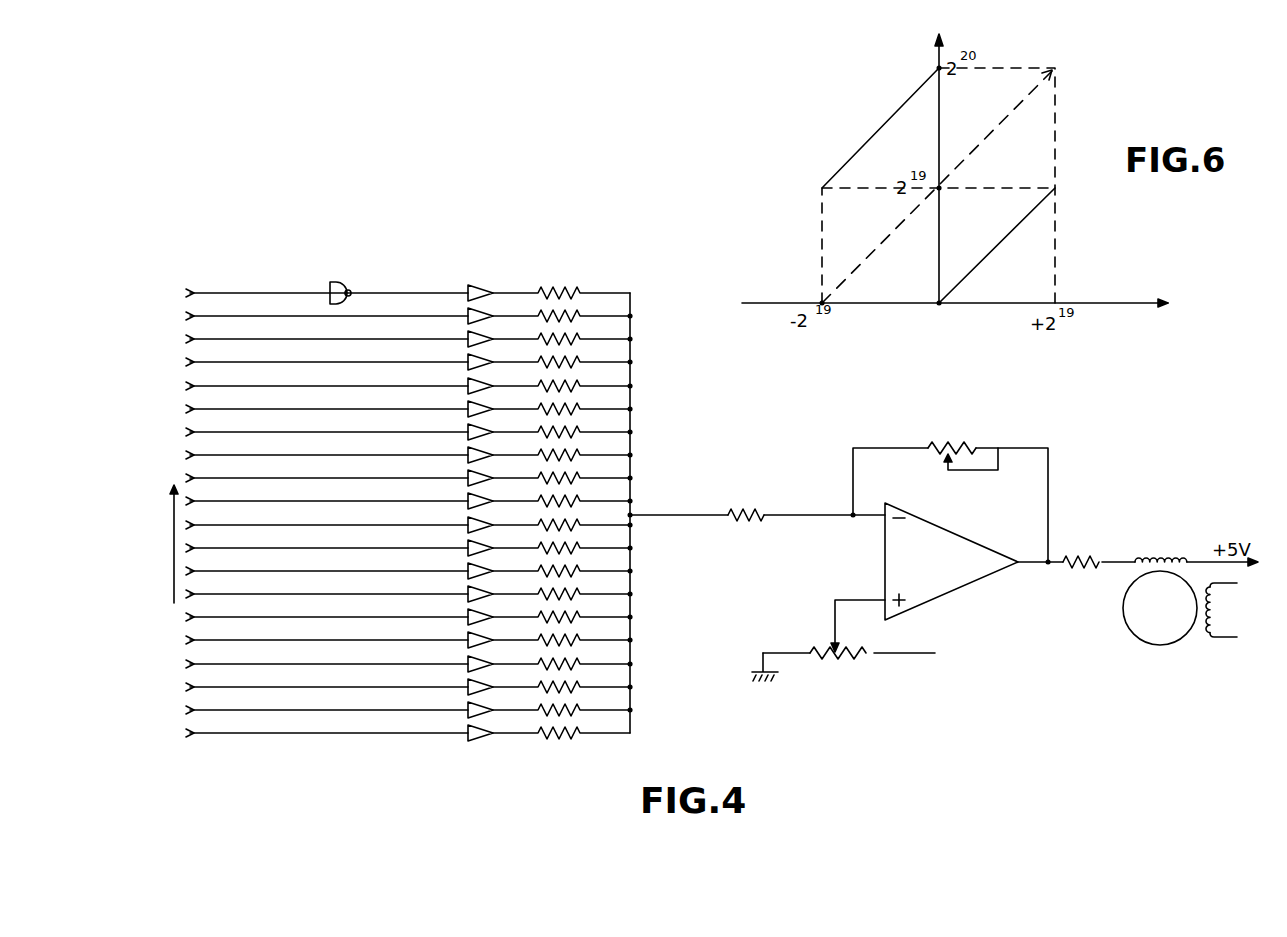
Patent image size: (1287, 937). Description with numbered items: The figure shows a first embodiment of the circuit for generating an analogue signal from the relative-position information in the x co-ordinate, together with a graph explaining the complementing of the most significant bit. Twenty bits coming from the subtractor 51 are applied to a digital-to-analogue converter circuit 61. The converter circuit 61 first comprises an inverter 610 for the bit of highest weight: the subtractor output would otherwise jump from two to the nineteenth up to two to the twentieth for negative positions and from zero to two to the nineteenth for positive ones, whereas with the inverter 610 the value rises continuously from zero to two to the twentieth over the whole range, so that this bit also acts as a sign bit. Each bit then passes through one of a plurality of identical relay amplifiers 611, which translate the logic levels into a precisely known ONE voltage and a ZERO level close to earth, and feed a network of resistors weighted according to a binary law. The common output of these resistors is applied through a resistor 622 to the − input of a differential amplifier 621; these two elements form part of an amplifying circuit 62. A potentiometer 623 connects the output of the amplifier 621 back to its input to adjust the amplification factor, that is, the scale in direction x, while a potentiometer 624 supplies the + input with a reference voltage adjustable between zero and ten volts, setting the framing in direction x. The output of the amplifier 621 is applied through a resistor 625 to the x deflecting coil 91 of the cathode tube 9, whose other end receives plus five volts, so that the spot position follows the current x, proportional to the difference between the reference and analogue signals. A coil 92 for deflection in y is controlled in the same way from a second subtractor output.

The subtractor 51 is at (139, 498).
The digital-to-analogue converter circuit 61 is at (650, 250).
The inverter 610 is at (330, 285).
The relay amplifiers 611 is at (479, 277).
The amplifying circuit 62 is at (1077, 700).
The differential amplifier 621 is at (973, 550).
The resistor 622 is at (753, 508).
The potentiometer 623 is at (958, 446).
The potentiometer 624 is at (846, 662).
The resistor 625 is at (1086, 570).
The cathode tube 9 is at (1148, 652).
The deflecting coil 91 is at (1167, 552).
The coil for deflection y 92 is at (1216, 642).